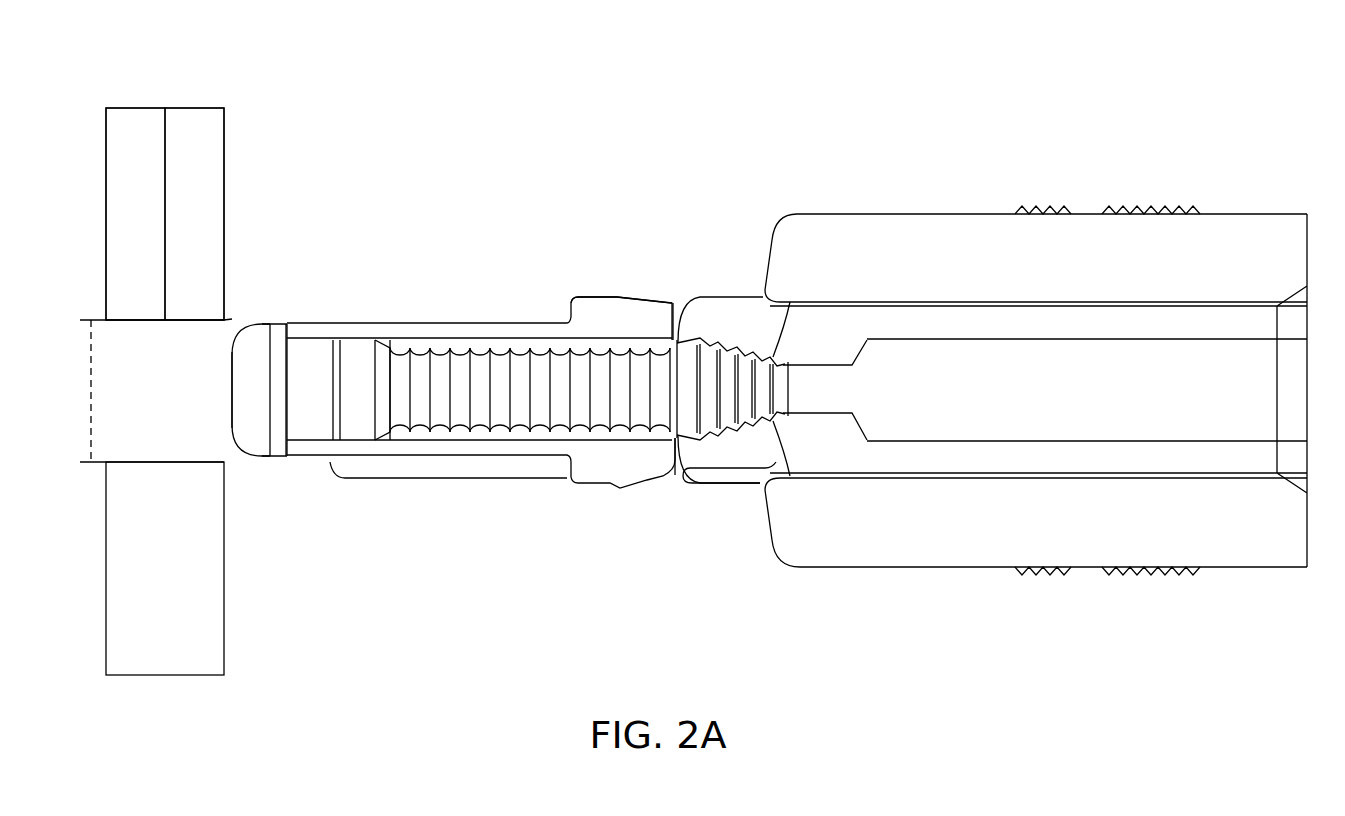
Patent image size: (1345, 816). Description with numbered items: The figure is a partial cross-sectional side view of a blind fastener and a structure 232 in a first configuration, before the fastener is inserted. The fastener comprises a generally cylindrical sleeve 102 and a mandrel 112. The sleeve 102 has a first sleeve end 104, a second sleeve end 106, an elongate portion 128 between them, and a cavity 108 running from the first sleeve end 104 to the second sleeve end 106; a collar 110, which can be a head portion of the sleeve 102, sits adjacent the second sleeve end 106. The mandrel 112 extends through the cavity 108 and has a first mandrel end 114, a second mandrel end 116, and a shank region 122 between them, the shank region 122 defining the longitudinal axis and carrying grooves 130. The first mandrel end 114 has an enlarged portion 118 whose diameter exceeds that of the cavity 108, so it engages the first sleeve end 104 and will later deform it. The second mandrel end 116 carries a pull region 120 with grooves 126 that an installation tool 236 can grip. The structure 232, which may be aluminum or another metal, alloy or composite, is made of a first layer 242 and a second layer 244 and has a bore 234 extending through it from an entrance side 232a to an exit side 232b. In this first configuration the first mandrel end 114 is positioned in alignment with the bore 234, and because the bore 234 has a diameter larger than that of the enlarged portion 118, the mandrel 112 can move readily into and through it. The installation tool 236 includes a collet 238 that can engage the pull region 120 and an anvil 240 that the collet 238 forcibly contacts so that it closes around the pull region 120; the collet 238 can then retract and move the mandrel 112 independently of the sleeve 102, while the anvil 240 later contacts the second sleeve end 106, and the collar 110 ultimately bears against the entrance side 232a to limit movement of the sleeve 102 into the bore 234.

The sleeve 102 is at (495, 323).
The first sleeve end 104 is at (372, 333).
The second sleeve end 106 is at (672, 303).
The cavity 108 is at (400, 438).
The collar 110 is at (622, 297).
The mandrel 112 is at (312, 432).
The first mandrel end 114 is at (232, 382).
The second mandrel end 116 is at (793, 397).
The enlarged portion 118 is at (242, 420).
The pull region 120 is at (728, 472).
The shank region 122 is at (458, 438).
The grooves 126 is at (793, 300).
The elongate portion 128 is at (403, 322).
The grooves 130 is at (502, 480).
The structure 232 is at (215, 201).
The entrance side 232a is at (232, 320).
The exit side 232b is at (100, 320).
The bore 234 is at (116, 366).
The installation tool 236 is at (1260, 216).
The collet 238 is at (727, 317).
The anvil 240 is at (850, 216).
The first layer 242 is at (199, 108).
The second layer 244 is at (127, 158).